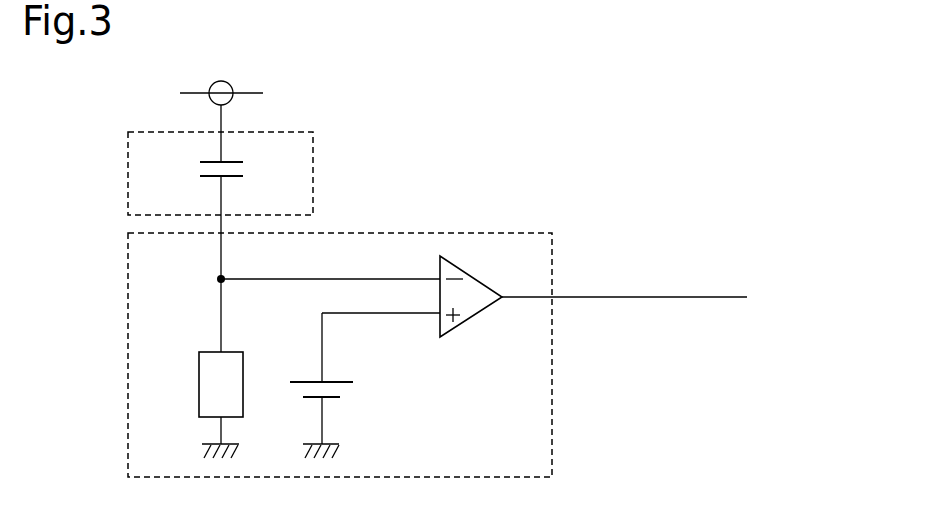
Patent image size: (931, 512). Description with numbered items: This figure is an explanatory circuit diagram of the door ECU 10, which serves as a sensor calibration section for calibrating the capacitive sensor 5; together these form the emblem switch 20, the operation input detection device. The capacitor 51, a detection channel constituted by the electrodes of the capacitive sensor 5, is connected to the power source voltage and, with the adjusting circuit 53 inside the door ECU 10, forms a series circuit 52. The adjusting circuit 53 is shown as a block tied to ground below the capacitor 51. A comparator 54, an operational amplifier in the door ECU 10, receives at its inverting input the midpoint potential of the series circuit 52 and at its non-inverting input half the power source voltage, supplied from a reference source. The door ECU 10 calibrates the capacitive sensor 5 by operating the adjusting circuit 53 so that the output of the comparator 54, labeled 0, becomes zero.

The emblem switch 20 is at (567, 147).
The series circuit 52 is at (148, 118).
The capacitive sensor 5 is at (300, 132).
The capacitor 51 is at (217, 162).
The door ECU 10 is at (552, 233).
The adjusting circuit 53 is at (199, 382).
The comparator 54 is at (437, 335).
The output terminal 0 is at (624, 280).